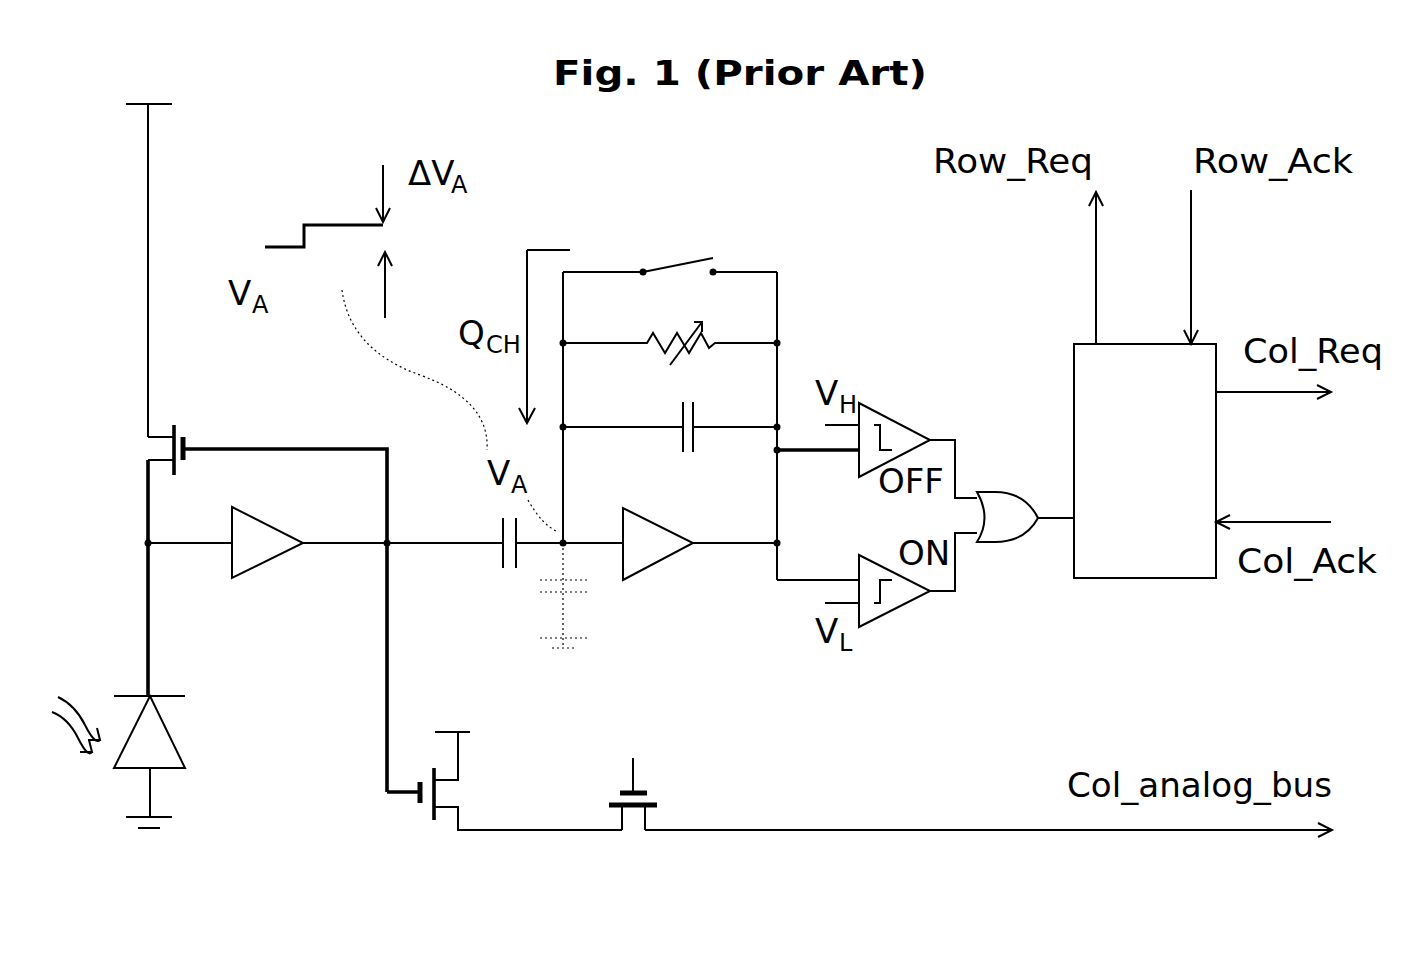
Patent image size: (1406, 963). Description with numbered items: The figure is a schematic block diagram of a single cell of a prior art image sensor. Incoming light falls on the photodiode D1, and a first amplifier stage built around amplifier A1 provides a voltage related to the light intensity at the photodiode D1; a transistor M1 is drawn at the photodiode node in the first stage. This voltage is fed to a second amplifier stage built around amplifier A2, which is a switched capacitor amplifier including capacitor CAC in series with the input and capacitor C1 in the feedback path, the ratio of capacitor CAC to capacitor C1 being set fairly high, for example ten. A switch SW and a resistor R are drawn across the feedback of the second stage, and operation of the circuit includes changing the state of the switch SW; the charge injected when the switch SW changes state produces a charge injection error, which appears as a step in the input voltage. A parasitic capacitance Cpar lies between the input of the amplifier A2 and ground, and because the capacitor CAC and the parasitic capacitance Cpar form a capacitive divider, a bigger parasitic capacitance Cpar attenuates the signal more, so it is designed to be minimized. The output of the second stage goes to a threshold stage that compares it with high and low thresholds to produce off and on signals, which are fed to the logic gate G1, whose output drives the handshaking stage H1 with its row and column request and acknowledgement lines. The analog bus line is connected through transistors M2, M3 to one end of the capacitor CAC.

The reset transistor M1 is at (236, 608).
The amplifier A1 is at (285, 545).
The photodiode D1 is at (176, 762).
The transistor M2 is at (504, 781).
The transistor M3 is at (685, 798).
The switch SW is at (670, 238).
The variable feedback resistor R is at (670, 359).
The capacitor C1 is at (670, 447).
The capacitor CAC is at (478, 556).
The parasitic capacitance Cpar is at (600, 595).
The amplifier A2 is at (677, 547).
The logic gate G1 is at (1003, 530).
The handshaking stage H1 is at (1170, 560).